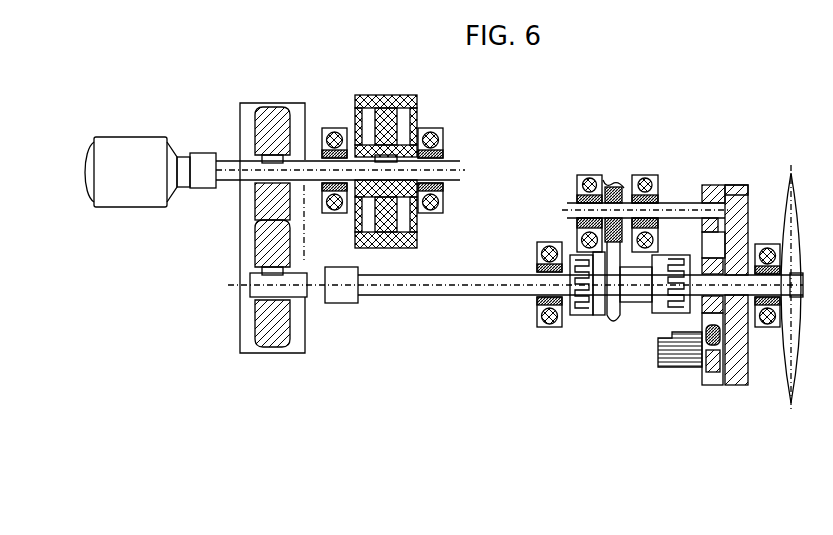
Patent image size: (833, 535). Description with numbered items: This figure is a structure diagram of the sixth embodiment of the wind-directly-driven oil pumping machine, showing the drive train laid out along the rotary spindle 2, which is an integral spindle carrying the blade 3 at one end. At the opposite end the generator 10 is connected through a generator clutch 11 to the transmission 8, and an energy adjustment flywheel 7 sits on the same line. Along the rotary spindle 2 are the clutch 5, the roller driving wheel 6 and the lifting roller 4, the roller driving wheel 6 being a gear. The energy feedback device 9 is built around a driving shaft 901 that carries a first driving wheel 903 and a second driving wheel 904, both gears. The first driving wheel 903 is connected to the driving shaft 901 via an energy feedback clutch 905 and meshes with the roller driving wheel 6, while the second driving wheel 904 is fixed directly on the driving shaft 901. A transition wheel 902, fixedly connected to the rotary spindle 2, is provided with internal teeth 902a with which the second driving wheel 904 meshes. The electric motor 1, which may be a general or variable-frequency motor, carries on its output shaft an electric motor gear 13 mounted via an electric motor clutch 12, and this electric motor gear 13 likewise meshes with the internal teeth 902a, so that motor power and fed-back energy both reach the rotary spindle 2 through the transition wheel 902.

The electric motor 1 is at (665, 368).
The rotary spindle 2 is at (410, 290).
The blade 3 is at (798, 214).
The lifting roller 4 is at (647, 300).
The clutch 5 is at (585, 305).
The roller driving wheel 6 is at (614, 328).
The energy adjustment flywheel 7 is at (387, 95).
The transmission 8 is at (238, 330).
The energy feedback device 9 is at (646, 207).
The generator 10 is at (127, 150).
The generator clutch 11 is at (205, 158).
The electric motor clutch 12 is at (722, 338).
The electric motor gear 13 is at (717, 362).
The driving shaft 901 is at (670, 200).
The transition wheel 902 is at (749, 207).
The internal teeth 902a is at (735, 184).
The first driving wheel 903 is at (610, 178).
The second driving wheel 904 is at (711, 184).
The energy feedback clutch 905 is at (628, 186).